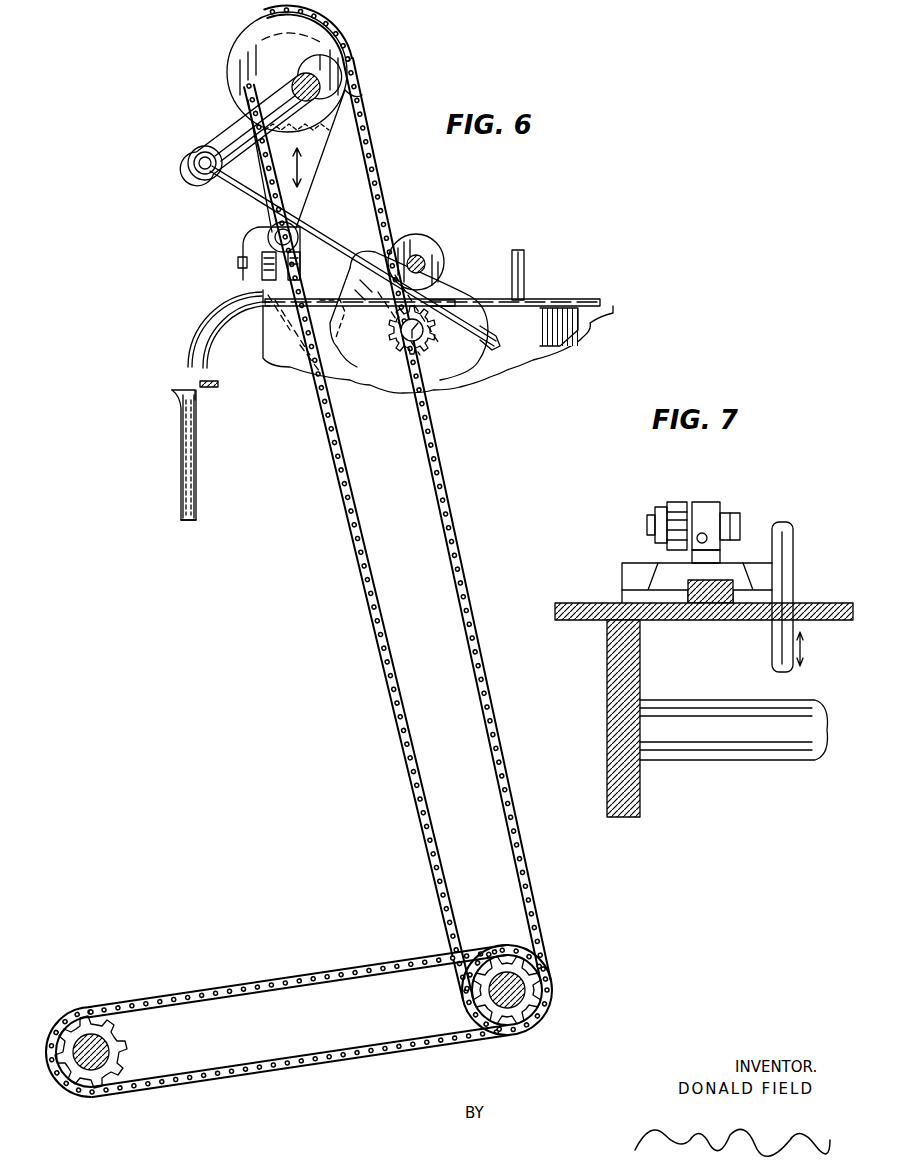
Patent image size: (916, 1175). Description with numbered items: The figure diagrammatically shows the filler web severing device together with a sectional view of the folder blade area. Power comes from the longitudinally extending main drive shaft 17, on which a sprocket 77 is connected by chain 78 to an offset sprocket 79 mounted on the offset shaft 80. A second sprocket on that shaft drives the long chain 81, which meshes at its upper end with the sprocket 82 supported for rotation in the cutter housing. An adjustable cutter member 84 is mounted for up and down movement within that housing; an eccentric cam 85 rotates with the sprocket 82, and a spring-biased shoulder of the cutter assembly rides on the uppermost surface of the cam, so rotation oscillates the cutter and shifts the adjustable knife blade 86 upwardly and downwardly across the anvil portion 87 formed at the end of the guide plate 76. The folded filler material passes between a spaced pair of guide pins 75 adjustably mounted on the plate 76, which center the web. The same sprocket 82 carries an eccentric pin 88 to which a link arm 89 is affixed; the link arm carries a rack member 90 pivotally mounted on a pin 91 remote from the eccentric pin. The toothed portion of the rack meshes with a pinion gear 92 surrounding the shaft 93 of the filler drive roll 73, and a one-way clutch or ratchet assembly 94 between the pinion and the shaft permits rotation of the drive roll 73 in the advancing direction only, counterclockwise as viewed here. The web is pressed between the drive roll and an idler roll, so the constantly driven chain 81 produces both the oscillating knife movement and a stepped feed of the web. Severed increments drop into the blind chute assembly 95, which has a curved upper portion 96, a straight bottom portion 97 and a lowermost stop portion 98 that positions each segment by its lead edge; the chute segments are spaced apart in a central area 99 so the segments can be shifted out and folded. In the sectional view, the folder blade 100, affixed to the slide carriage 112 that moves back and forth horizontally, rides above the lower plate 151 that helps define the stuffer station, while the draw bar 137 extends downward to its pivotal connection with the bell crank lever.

In FIG. 6, the main drive shaft 17 is at (92, 1038).
In FIG. 6, the filler drive roll 73 is at (438, 392).
In FIG. 6, the guide pins 75 is at (527, 273).
In FIG. 6, the guide plate 76 is at (600, 310).
In FIG. 6, the sprocket 77 is at (132, 1060).
In FIG. 6, the chain 78 is at (258, 965).
In FIG. 6, the offset sprocket 79 is at (535, 1022).
In FIG. 6, the offset shaft 80 is at (520, 990).
In FIG. 6, the chain 81 is at (541, 940).
In FIG. 6, the sprocket 82 is at (349, 55).
In FIG. 6, the adjustable cutter member 84 is at (262, 54).
In FIG. 6, the eccentric cam 85 is at (240, 87).
In FIG. 6, the adjustable knife blade 86 is at (243, 277).
In FIG. 6, the anvil portion 87 is at (262, 322).
In FIG. 6, the eccentric pin 88 is at (363, 91).
In FIG. 6, the link arm 89 is at (207, 146).
In FIG. 6, the rack member 90 is at (217, 177).
In FIG. 6, the pin 91 is at (196, 171).
In FIG. 6, the pinion gear 92 is at (478, 378).
In FIG. 6, the shaft 93 is at (398, 352).
In FIG. 6, the one-way clutch or ratchet assembly 94 is at (448, 301).
In FIG. 6, the blind chute assembly 95 is at (172, 420).
In FIG. 6, the curved upper portion 96 is at (188, 345).
In FIG. 6, the straight bottom portion 97 is at (197, 512).
In FIG. 6, the stop portion 98 is at (189, 521).
In FIG. 6, the central area 99 is at (170, 390).
In FIG. 6, the folder blade 100 is at (210, 388).
In FIG. 7, the slide carriage 112 is at (680, 503).
In FIG. 7, the draw bar 137 is at (796, 556).
In FIG. 7, the lower plate 151 is at (834, 624).